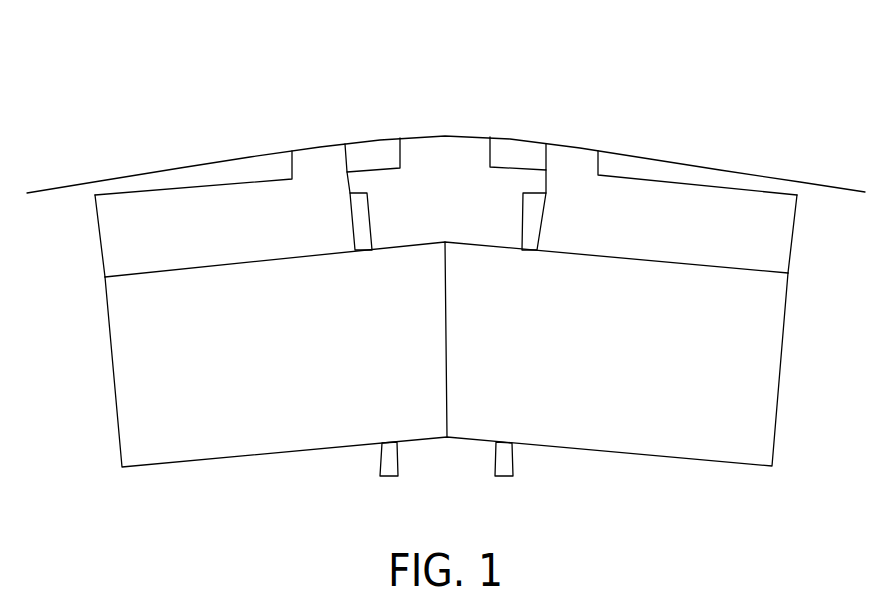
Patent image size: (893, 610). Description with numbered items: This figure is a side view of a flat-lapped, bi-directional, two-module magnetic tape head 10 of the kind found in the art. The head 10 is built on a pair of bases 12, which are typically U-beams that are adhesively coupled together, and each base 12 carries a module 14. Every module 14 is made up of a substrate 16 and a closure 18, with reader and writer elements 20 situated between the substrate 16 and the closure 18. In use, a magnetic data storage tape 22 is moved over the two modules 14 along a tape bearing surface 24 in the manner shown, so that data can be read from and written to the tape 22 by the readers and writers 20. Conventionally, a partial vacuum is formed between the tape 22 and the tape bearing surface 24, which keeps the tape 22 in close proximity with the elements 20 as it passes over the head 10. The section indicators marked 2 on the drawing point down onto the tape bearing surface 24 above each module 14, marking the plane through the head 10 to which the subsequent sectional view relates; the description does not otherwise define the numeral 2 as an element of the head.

The magnetic tape head 10 is at (205, 93).
The base 12 is at (108, 340).
The module 14 is at (100, 248).
The substrate 16 is at (143, 203).
The closure 18 is at (490, 156).
The reader and writer elements 20 is at (548, 141).
The magnetic data storage tape 22 is at (755, 173).
The tape bearing surface 24 is at (313, 148).
The section line 2 is at (313, 110).